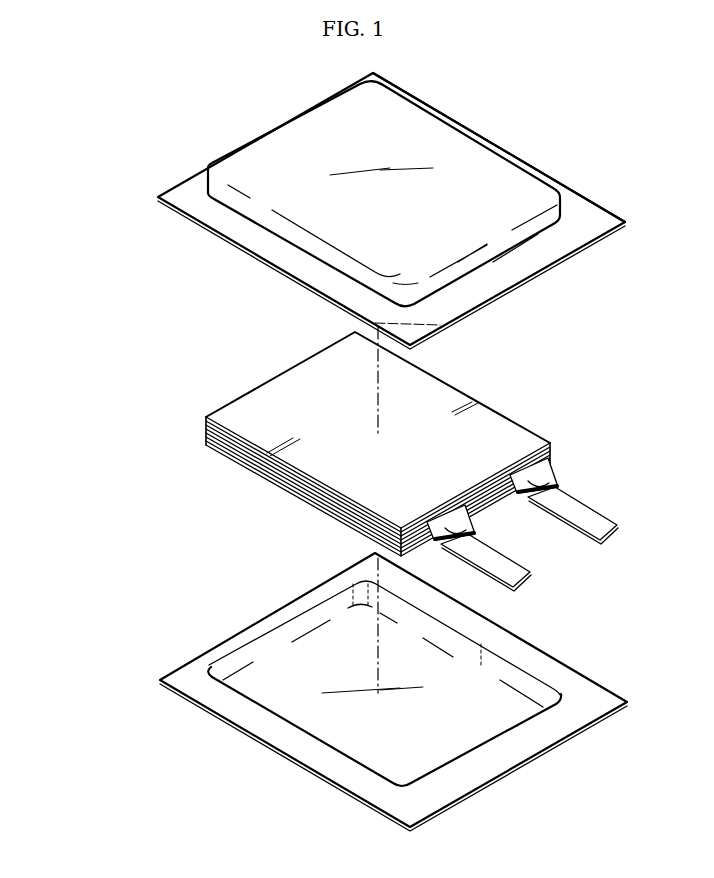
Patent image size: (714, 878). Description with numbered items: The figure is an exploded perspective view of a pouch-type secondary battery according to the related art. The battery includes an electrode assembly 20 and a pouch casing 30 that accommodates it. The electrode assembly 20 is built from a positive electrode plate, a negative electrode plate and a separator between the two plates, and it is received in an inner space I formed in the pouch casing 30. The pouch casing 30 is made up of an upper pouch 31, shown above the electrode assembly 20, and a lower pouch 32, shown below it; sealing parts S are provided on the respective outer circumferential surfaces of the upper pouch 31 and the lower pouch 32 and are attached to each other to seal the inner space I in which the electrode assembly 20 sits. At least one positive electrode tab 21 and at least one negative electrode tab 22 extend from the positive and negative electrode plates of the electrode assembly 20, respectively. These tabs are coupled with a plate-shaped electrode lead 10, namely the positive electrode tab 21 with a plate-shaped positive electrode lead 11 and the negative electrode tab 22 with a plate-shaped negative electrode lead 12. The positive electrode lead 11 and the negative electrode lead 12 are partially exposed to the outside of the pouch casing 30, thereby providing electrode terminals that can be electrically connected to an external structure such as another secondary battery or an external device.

The electrode lead 10 is at (668, 556).
The positive electrode lead 11 is at (612, 531).
The negative electrode lead 12 is at (533, 578).
The electrode assembly 20 is at (495, 428).
The positive electrode tab 21 is at (545, 478).
The negative electrode tab 22 is at (463, 516).
The pouch casing 30 is at (63, 365).
The upper pouch 31 is at (197, 200).
The lower pouch 32 is at (190, 690).
The sealing part S is at (593, 207).
The inner space I is at (504, 702).